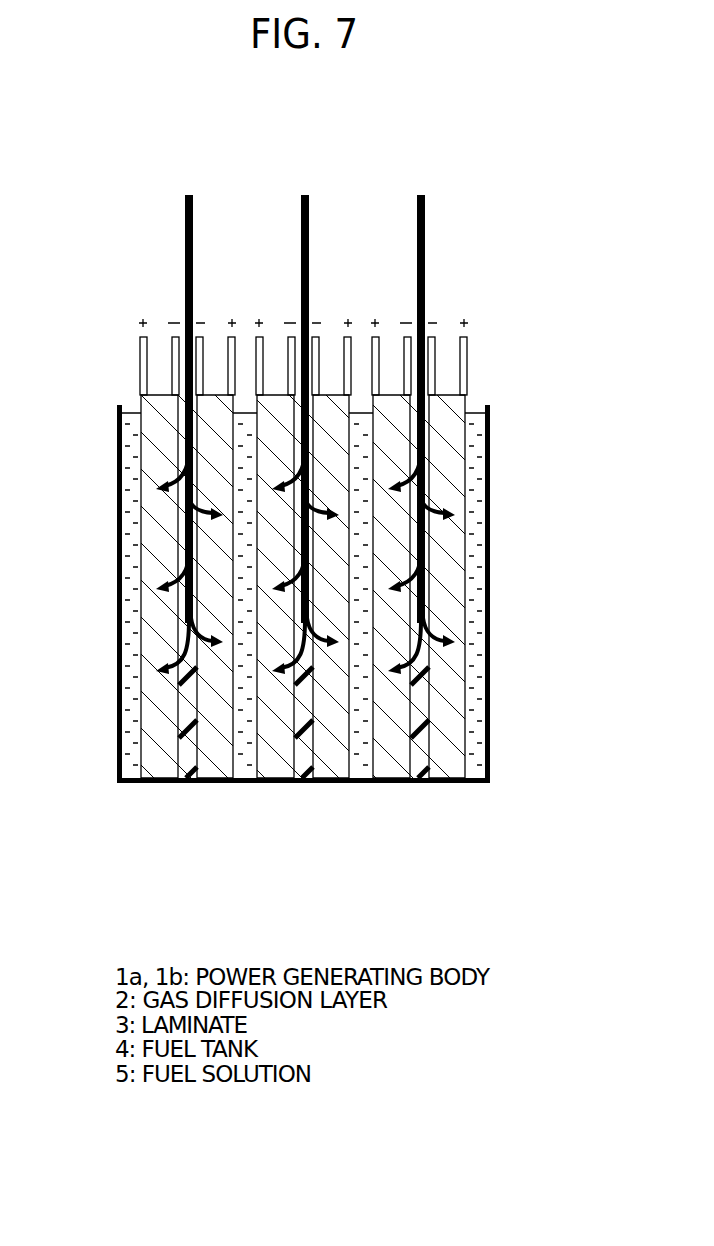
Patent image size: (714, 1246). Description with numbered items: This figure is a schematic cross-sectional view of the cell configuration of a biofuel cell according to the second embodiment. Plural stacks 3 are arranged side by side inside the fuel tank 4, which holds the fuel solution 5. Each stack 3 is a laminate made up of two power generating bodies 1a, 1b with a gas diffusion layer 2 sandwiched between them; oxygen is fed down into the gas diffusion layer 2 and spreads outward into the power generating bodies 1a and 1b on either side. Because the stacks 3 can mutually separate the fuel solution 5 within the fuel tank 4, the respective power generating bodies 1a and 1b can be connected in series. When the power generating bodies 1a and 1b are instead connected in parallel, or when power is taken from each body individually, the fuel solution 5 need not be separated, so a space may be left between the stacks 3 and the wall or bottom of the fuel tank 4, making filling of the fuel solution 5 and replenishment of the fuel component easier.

The power generating body 1a is at (157, 540).
The power generating body 1b is at (460, 446).
The gas diffusion layer 2 is at (430, 545).
The stack 3 is at (308, 500).
The fuel tank 4 is at (490, 602).
The fuel solution 5 is at (128, 734).